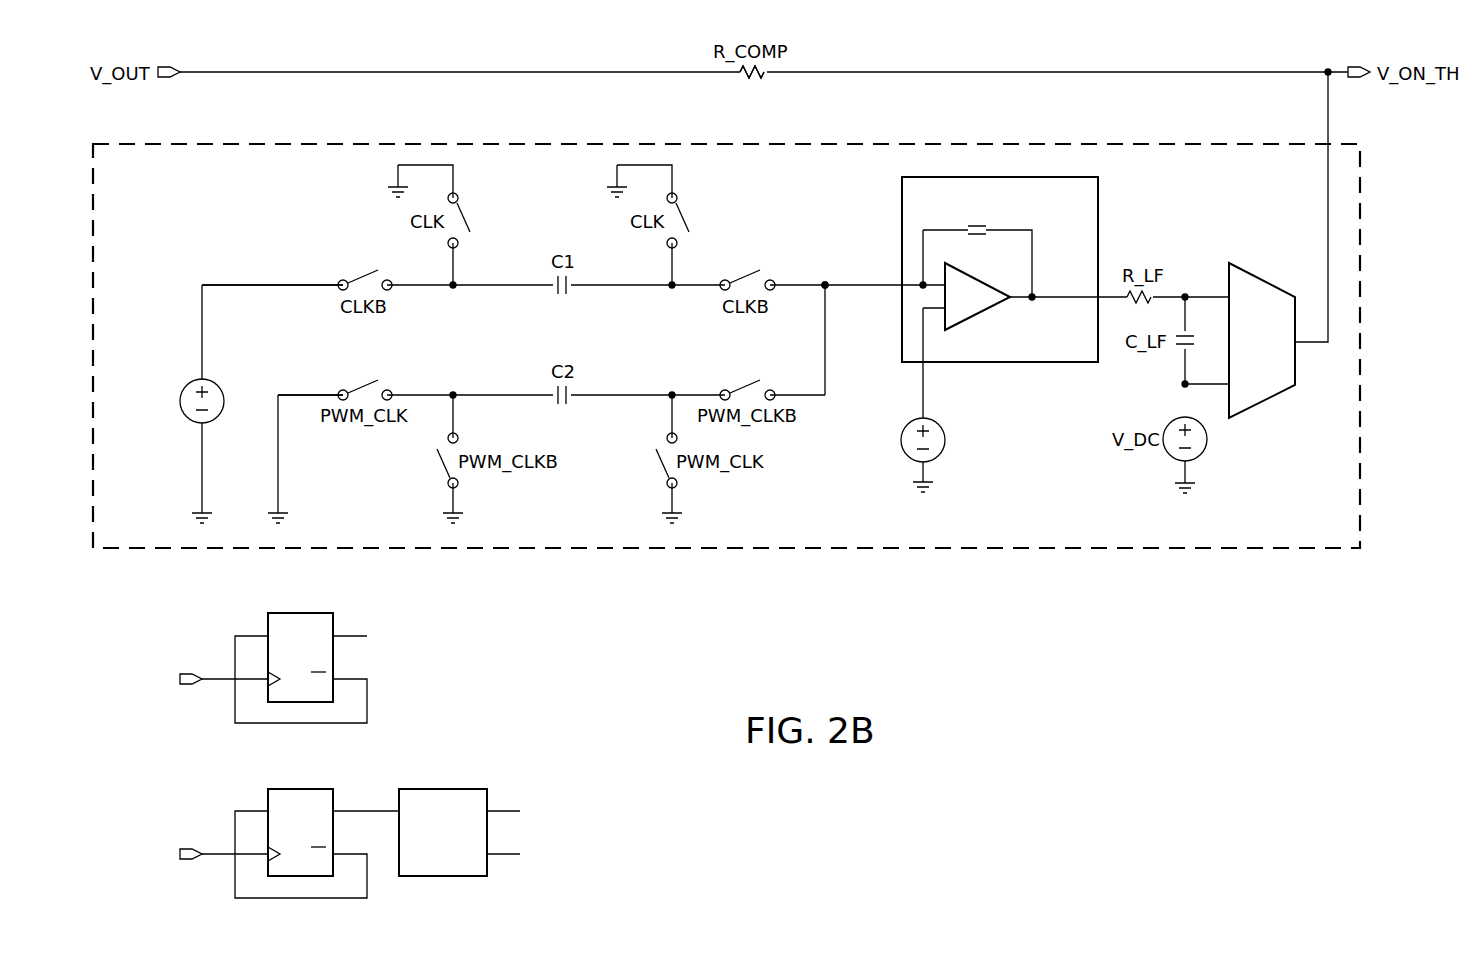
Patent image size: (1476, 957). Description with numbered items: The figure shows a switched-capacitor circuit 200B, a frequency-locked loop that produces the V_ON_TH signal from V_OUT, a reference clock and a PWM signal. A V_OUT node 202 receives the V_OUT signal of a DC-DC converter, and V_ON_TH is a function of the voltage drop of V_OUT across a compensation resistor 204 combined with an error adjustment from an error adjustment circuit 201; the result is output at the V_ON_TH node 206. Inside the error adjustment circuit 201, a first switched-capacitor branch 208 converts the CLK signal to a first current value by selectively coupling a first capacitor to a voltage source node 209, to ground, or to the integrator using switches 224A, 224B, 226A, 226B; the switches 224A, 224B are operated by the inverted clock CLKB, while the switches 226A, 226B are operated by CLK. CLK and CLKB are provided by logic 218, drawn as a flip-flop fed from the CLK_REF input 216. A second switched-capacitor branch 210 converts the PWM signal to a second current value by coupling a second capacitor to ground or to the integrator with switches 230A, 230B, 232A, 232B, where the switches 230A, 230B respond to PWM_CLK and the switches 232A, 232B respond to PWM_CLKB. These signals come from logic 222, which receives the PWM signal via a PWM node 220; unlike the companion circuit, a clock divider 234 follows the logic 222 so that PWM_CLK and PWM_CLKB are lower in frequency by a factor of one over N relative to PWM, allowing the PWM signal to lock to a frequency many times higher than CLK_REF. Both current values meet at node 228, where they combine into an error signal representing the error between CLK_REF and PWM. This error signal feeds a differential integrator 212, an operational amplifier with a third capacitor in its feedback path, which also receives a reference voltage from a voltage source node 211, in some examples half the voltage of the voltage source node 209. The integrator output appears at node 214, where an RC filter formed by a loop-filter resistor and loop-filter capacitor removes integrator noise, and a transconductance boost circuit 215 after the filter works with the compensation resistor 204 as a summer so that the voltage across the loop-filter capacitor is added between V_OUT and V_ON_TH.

The switched-capacitor circuit 200B is at (1173, 682).
The error adjustment circuit 201 is at (1056, 490).
The V_OUT node 202 is at (160, 70).
The resistor 204 is at (750, 76).
The V_ON_TH node 206 is at (1363, 70).
The first switched-capacitor branch 208 is at (255, 270).
The voltage source node 209 is at (178, 404).
The second switched-capacitor branch 210 is at (298, 380).
The voltage source node 211 is at (902, 438).
The differential integrator 212 is at (1098, 220).
The node 214 is at (1036, 294).
The transconductance boost circuit 215 is at (1263, 407).
The CLK_REF input 216 is at (186, 670).
The logic 218 is at (302, 612).
The PWM node 220 is at (186, 866).
The logic 222 is at (302, 787).
The switch 224A is at (353, 270).
The switch 224B is at (735, 270).
The switch 226A is at (470, 217).
The switch 226B is at (690, 217).
The node 228 is at (832, 292).
The switch 230A is at (353, 380).
The switch 230B is at (654, 470).
The switch 232A is at (436, 470).
The switch 232B is at (735, 380).
The clock divider 234 is at (444, 787).